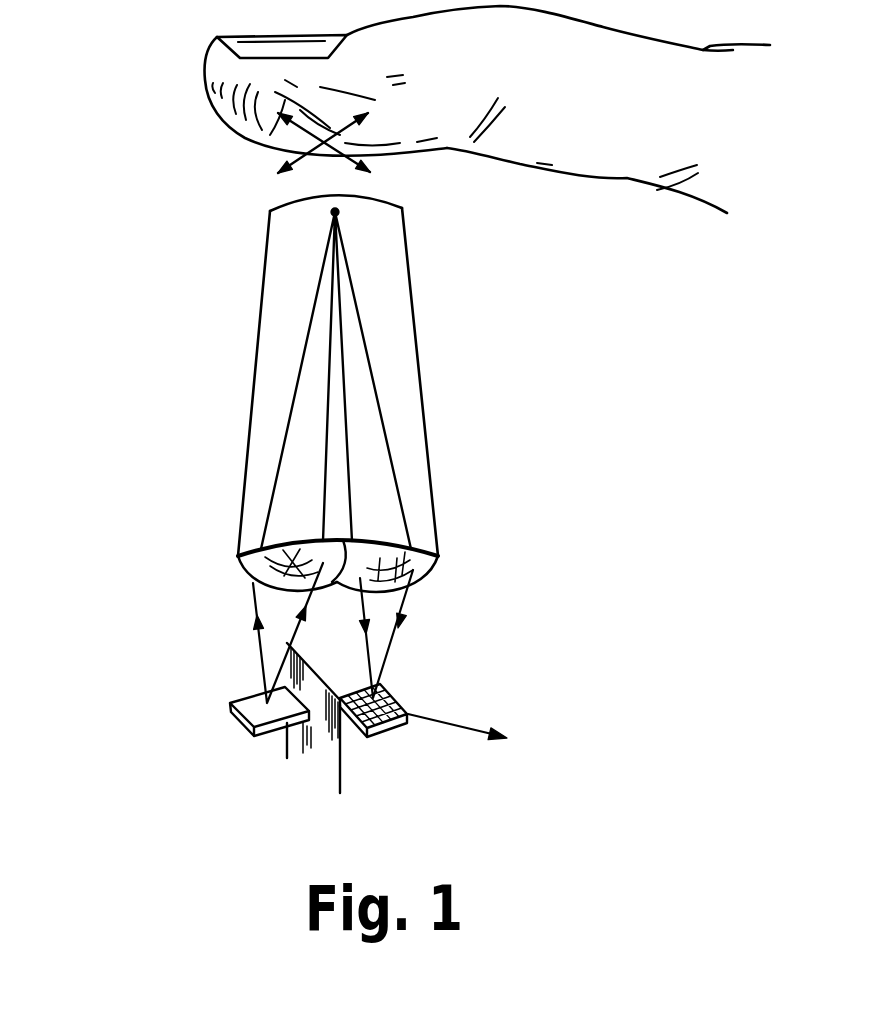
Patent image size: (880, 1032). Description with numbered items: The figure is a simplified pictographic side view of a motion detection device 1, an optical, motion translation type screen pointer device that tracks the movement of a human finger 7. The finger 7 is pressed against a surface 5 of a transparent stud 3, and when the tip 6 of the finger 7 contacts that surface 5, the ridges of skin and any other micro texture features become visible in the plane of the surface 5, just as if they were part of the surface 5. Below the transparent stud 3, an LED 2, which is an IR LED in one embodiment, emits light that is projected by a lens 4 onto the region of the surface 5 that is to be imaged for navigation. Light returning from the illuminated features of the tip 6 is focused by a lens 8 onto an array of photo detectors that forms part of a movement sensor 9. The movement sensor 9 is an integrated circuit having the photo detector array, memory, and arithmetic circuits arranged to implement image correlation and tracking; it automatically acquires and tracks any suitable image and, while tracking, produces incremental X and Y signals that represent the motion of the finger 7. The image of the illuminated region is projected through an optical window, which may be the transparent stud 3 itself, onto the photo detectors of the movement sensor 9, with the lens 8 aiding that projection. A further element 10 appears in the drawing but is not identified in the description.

The motion detection device 1 is at (160, 163).
The LED 2 is at (230, 703).
The transparent stud 3 is at (333, 387).
The lens 4 is at (242, 570).
The surface 5 is at (280, 202).
The tip of finger 6 is at (242, 128).
The finger 7 is at (607, 183).
The lens 8 is at (428, 567).
The movement sensor 9 is at (410, 690).
The housing 10 is at (342, 772).